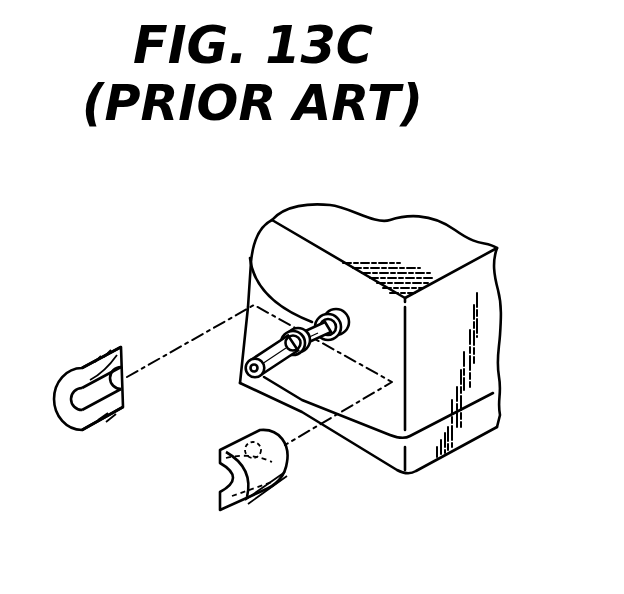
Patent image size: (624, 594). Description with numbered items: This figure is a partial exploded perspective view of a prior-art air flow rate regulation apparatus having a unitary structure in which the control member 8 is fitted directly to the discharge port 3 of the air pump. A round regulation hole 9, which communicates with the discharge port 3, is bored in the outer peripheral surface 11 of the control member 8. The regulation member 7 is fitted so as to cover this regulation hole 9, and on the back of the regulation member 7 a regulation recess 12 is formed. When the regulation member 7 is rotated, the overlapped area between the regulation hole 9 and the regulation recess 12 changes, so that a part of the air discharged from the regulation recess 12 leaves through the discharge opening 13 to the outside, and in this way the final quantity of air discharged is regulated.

The discharge port 3 is at (240, 383).
The regulation member 7 is at (62, 404).
The control member 8 is at (283, 353).
The regulation hole 9 is at (254, 306).
The outer peripheral surface 11 is at (324, 338).
The regulation recess 12 is at (106, 418).
The discharge opening 13 is at (123, 367).